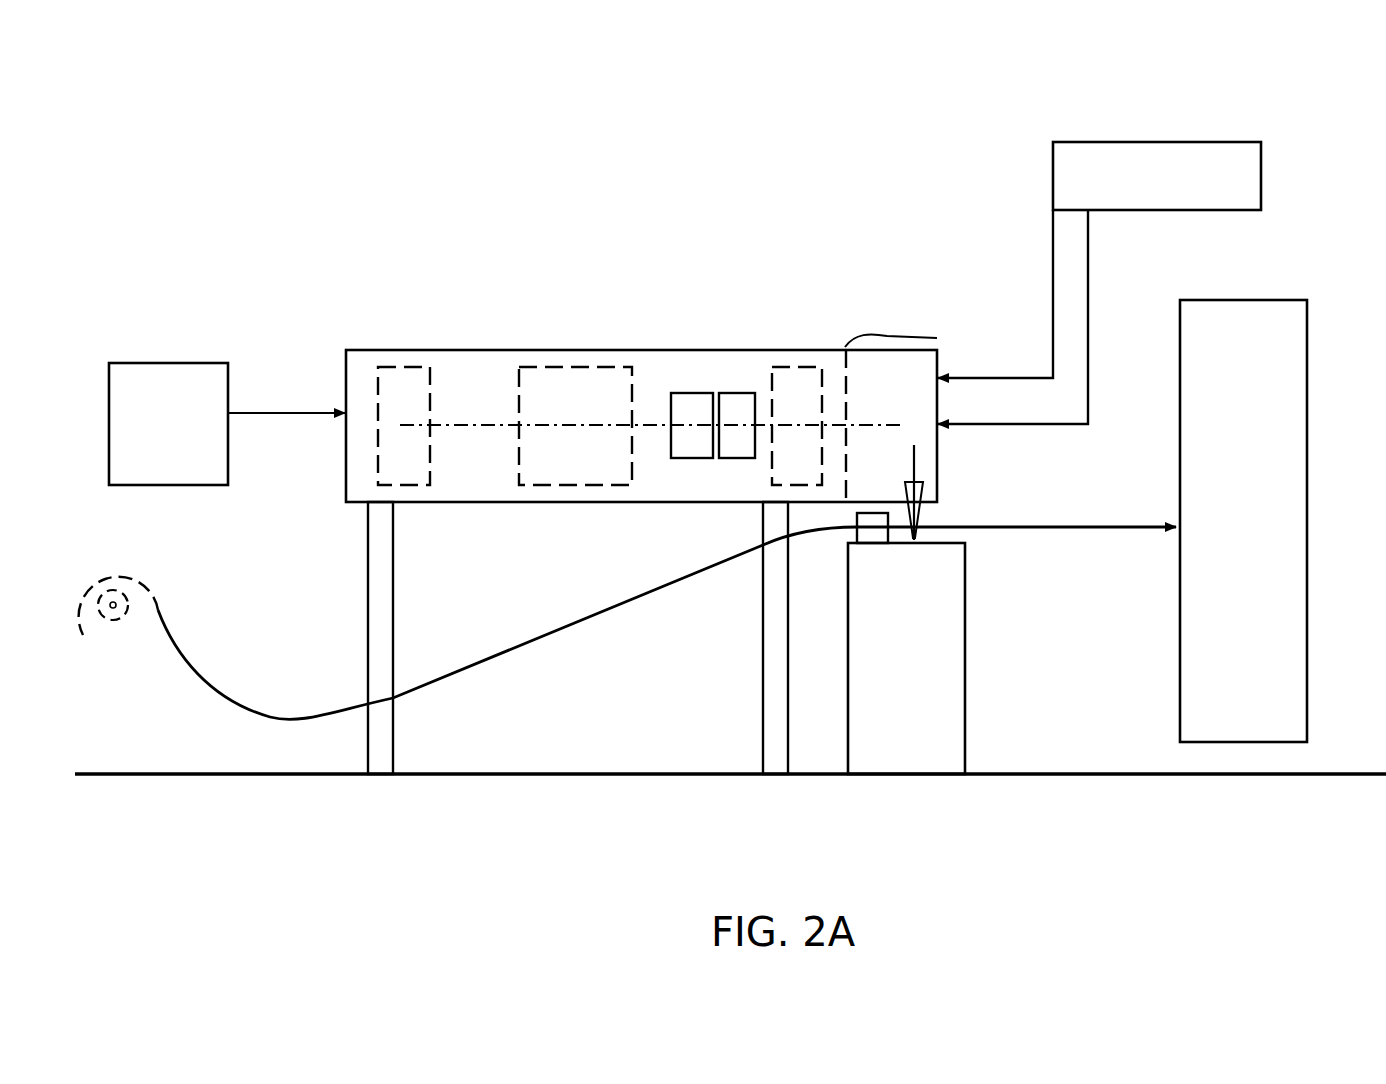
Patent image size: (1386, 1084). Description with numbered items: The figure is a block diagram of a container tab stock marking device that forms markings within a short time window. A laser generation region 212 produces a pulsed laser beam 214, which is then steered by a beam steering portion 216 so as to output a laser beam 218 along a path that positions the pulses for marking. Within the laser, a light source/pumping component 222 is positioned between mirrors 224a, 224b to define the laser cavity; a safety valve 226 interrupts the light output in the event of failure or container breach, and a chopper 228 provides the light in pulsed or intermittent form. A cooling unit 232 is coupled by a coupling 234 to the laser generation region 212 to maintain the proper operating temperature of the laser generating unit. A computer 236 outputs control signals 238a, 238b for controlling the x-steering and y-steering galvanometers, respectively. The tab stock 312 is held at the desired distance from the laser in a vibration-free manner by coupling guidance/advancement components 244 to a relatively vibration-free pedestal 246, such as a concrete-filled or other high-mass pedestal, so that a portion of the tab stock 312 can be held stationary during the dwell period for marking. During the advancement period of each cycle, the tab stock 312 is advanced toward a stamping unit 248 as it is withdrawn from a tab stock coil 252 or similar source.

The laser generation region 212 is at (845, 347).
The pulsed laser beam 214 is at (645, 420).
The beam steering portion 216 is at (888, 336).
The output laser beam 218 is at (920, 512).
The light source/pumping component 222 is at (580, 380).
The mirror 224a is at (402, 380).
The mirror 224b is at (795, 380).
The safety valve 226 is at (678, 398).
The chopper 228 is at (738, 442).
The cooling unit 232 is at (168, 404).
The coupling 234 is at (286, 368).
The computer 236 is at (1157, 159).
The control signal 238a is at (1053, 233).
The control signal 238b is at (1088, 246).
The guidance/advancement components 244 is at (873, 535).
The vibration-free pedestal 246 is at (906, 658).
The stamping unit 248 is at (1240, 300).
The tab stock coil 252 is at (105, 625).
The tab stock 312 is at (622, 617).